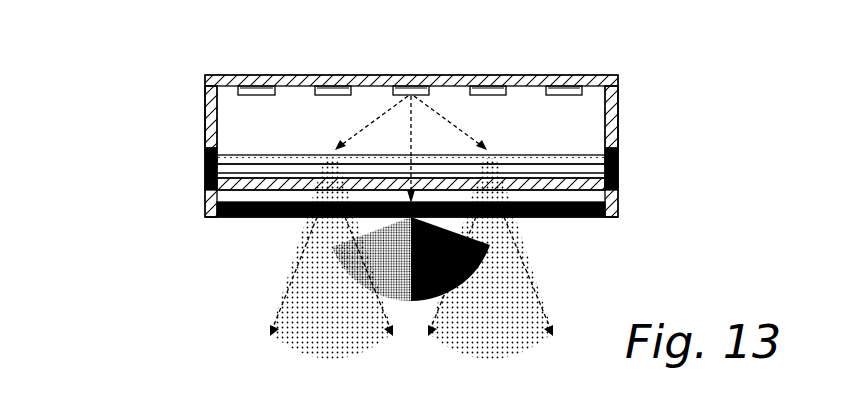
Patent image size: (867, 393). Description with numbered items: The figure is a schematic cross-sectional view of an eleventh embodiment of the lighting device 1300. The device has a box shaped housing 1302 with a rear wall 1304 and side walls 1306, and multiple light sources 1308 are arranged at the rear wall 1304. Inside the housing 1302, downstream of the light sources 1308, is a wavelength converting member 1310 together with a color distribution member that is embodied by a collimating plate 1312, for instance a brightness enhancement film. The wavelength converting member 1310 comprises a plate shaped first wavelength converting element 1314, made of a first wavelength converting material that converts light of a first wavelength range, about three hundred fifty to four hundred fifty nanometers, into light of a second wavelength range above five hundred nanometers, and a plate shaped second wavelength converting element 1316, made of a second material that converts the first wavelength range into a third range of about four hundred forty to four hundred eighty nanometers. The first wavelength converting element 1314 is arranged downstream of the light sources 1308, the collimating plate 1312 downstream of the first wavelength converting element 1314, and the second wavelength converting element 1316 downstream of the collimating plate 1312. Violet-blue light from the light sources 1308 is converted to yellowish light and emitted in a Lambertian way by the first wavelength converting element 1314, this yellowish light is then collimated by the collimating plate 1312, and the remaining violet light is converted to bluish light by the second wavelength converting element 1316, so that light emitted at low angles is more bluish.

The lighting device 1300 is at (176, 74).
The box shaped housing 1302 is at (383, 73).
The rear wall 1304 is at (312, 78).
The side walls 1306 is at (207, 133).
The light sources 1308 is at (252, 95).
The wavelength converting member 1310 is at (579, 237).
The collimating plate 1312 is at (207, 200).
The first wavelength converting element 1314 is at (207, 165).
The second wavelength converting element 1316 is at (240, 217).